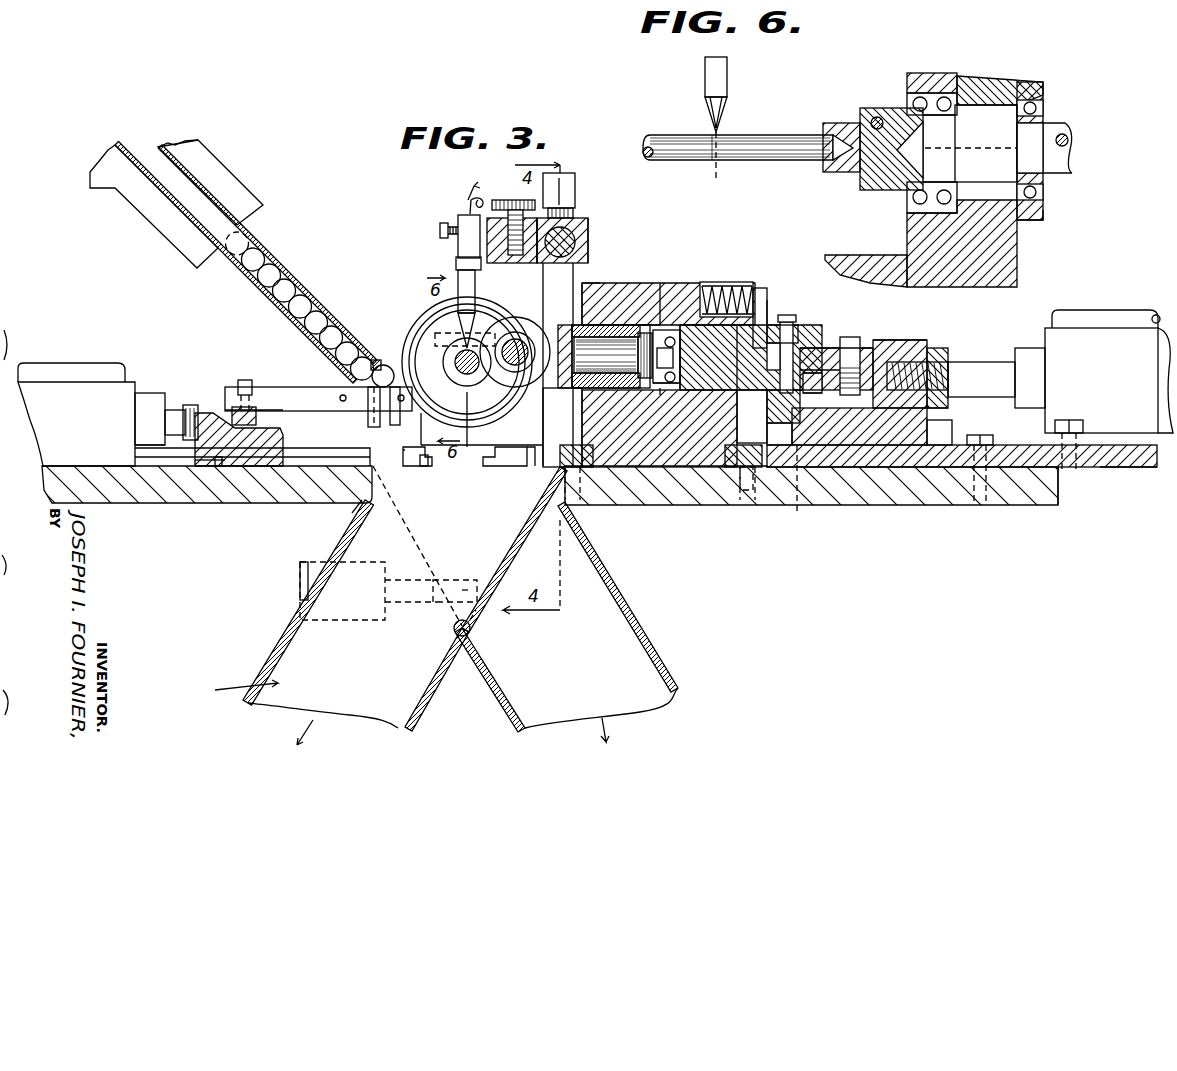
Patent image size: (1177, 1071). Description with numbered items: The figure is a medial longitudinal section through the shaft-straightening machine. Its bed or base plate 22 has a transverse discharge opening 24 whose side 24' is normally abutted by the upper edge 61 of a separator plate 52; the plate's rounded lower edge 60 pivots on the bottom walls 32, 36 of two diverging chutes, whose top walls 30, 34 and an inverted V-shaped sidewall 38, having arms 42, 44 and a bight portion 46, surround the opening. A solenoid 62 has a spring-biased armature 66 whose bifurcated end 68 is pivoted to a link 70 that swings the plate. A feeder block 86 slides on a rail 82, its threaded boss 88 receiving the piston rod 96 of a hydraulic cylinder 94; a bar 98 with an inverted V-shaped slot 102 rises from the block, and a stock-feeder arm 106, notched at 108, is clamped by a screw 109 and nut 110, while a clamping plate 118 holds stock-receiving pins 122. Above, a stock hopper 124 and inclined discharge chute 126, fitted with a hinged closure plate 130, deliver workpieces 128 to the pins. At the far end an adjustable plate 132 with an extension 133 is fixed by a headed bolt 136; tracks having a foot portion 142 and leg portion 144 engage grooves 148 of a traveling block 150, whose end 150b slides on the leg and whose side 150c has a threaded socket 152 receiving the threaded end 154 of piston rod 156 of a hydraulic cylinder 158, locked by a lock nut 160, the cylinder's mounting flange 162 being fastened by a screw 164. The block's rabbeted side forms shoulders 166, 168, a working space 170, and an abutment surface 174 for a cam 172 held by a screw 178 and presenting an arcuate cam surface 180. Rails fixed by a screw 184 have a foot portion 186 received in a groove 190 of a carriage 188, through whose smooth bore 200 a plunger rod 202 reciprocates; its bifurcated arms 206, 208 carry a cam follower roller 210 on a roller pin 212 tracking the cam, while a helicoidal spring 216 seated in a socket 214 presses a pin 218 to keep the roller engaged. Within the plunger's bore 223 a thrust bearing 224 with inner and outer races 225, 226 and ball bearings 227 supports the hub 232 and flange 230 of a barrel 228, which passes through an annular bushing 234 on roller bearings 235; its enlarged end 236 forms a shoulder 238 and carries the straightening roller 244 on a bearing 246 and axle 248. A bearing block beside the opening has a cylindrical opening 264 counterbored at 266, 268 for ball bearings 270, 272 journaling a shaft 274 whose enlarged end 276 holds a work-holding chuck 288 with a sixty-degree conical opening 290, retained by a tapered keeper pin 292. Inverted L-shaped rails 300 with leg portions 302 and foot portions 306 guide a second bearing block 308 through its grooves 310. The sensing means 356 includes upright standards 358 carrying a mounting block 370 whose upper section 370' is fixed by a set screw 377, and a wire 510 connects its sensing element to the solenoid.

In FIG. 3, the bed or base plate 22 is at (858, 503).
In FIG. 6, the bed or base plate 22 is at (886, 254).
In FIG. 3, the discharge opening 24 is at (417, 546).
In FIG. 3, the side of discharge opening 24' is at (599, 500).
In FIG. 3, the top wall 30 is at (262, 650).
In FIG. 3, the bottom wall 32 is at (420, 718).
In FIG. 3, the top wall 34 is at (660, 656).
In FIG. 3, the bottom wall 36 is at (510, 716).
In FIG. 3, the inverted V-shaped sidewall 38 is at (228, 689).
In FIG. 3, the downwardly-diverging arm 42 is at (285, 706).
In FIG. 3, the downwardly-diverging arm 44 is at (575, 718).
In FIG. 3, the bight portion 46 is at (490, 571).
In FIG. 3, the separator plate 52 is at (515, 556).
In FIG. 3, the rounded lower edge 60 is at (472, 630).
In FIG. 3, the upper edge 61 is at (537, 470).
In FIG. 3, the solenoid 62 is at (300, 580).
In FIG. 3, the armature 66 is at (418, 608).
In FIG. 3, the bifurcated outer end 68 is at (443, 583).
In FIG. 3, the link 70 is at (463, 588).
In FIG. 3, the L-shaped rail 82 is at (310, 460).
In FIG. 3, the feeder block 86 is at (227, 458).
In FIG. 3, the internally-threaded boss 88 is at (198, 415).
In FIG. 3, the hydraulic cylinder 94 is at (96, 370).
In FIG. 3, the piston rod 96 is at (185, 412).
In FIG. 3, the bar 98 is at (257, 412).
In FIG. 3, the inverted V-shaped slot 102 is at (202, 440).
In FIG. 3, the stock-feeder arm 106 is at (283, 394).
In FIG. 3, the notch 108 is at (245, 406).
In FIG. 3, the screw 109 is at (243, 380).
In FIG. 3, the nut 110 is at (220, 462).
In FIG. 3, the clamping plate 118 is at (366, 412).
In FIG. 3, the stock-receiving pin 122 is at (393, 424).
In FIG. 3, the metal stock hopper 124 is at (212, 143).
In FIG. 3, the stock-discharge chute 126 is at (311, 285).
In FIG. 3, the workpiece 128 is at (333, 320).
In FIG. 3, the closure plate 130 is at (384, 363).
In FIG. 3, the adjustable plate 132 is at (895, 470).
In FIG. 3, the extension 133 is at (1128, 468).
In FIG. 3, the headed bolt 136 is at (982, 426).
In FIG. 3, the foot portion 142 is at (940, 470).
In FIG. 3, the leg portion 144 is at (770, 420).
In FIG. 3, the groove 148 is at (778, 485).
In FIG. 3, the traveling block 150 is at (909, 334).
In FIG. 3, the end of traveling block 150b is at (748, 492).
In FIG. 3, the side of traveling block 150c is at (938, 346).
In FIG. 3, the internally-threaded socket 152 is at (908, 338).
In FIG. 3, the threaded end 154 is at (945, 372).
In FIG. 3, the piston rod 156 is at (975, 364).
In FIG. 3, the hydraulic cylinder 158 is at (1110, 332).
In FIG. 3, the lock nut 160 is at (940, 348).
In FIG. 3, the mounting flange 162 is at (1100, 470).
In FIG. 3, the screw 164 is at (1075, 419).
In FIG. 3, the shoulder 166 is at (810, 394).
In FIG. 3, the shoulder 168 is at (832, 348).
In FIG. 3, the working space 170 is at (818, 392).
In FIG. 3, the cam 172 is at (856, 336).
In FIG. 3, the abutment surface 174 is at (868, 345).
In FIG. 3, the screw 178 is at (846, 345).
In FIG. 3, the cam surface 180 is at (826, 347).
In FIG. 3, the screw 184 is at (738, 504).
In FIG. 3, the foot portion 186 is at (728, 446).
In FIG. 3, the carriage 188 is at (662, 322).
In FIG. 3, the groove 190 is at (616, 466).
In FIG. 3, the smooth bore 200 is at (625, 282).
In FIG. 3, the plunger rod 202 is at (710, 388).
In FIG. 3, the arm 206 is at (812, 322).
In FIG. 3, the arm 208 is at (815, 383).
In FIG. 3, the cam follower roller 210 is at (795, 316).
In FIG. 3, the roller pin 212 is at (800, 324).
In FIG. 3, the cylindrical socket 214 is at (730, 284).
In FIG. 3, the helicoidal spring 216 is at (760, 287).
In FIG. 3, the pin 218 is at (774, 320).
In FIG. 3, the cylindrical bore 223 is at (650, 322).
In FIG. 3, the bearing 224 is at (672, 330).
In FIG. 3, the inner bearing race 225 is at (668, 385).
In FIG. 3, the outer bearing race 226 is at (648, 420).
In FIG. 3, the ball bearing 227 is at (662, 390).
In FIG. 3, the barrel 228 is at (612, 356).
In FIG. 3, the flange 230 is at (620, 390).
In FIG. 3, the hub 232 is at (686, 322).
In FIG. 3, the annular bushing 234 is at (564, 401).
In FIG. 3, the roller bearing 235 is at (606, 282).
In FIG. 3, the enlarged outer end 236 is at (568, 322).
In FIG. 3, the circular shoulder 238 is at (600, 282).
In FIG. 3, the bar stock straightening roller 244 is at (508, 268).
In FIG. 3, the bearing 246 is at (508, 376).
In FIG. 3, the axle 248 is at (518, 340).
In FIG. 6, the cylindrical opening 264 is at (985, 96).
In FIG. 6, the counterbore 266 is at (1032, 221).
In FIG. 6, the counterbore 268 is at (965, 75).
In FIG. 6, the ball bearing 270 is at (899, 209).
In FIG. 6, the ball bearing 272 is at (1050, 103).
In FIG. 6, the shaft 274 is at (986, 143).
In FIG. 6, the enlarged end 276 is at (893, 108).
In FIG. 6, the work-holding chuck 288 is at (836, 130).
In FIG. 6, the conical opening 290 is at (830, 174).
In FIG. 6, the tapered keeper pin 292 is at (862, 106).
In FIG. 3, the L-shaped rail 300 is at (409, 467).
In FIG. 3, the leg portion 302 is at (404, 455).
In FIG. 3, the foot portion 306 is at (430, 503).
In FIG. 3, the second bearing block 308 is at (412, 305).
In FIG. 3, the groove 310 is at (434, 446).
In FIG. 3, the sensing means 356 is at (414, 233).
In FIG. 3, the upright standard 358 is at (574, 176).
In FIG. 3, the mounting block 370 is at (559, 364).
In FIG. 3, the upper block section 370' is at (582, 229).
In FIG. 3, the set screw 377 is at (570, 212).
In FIG. 3, the wire 510 is at (469, 192).